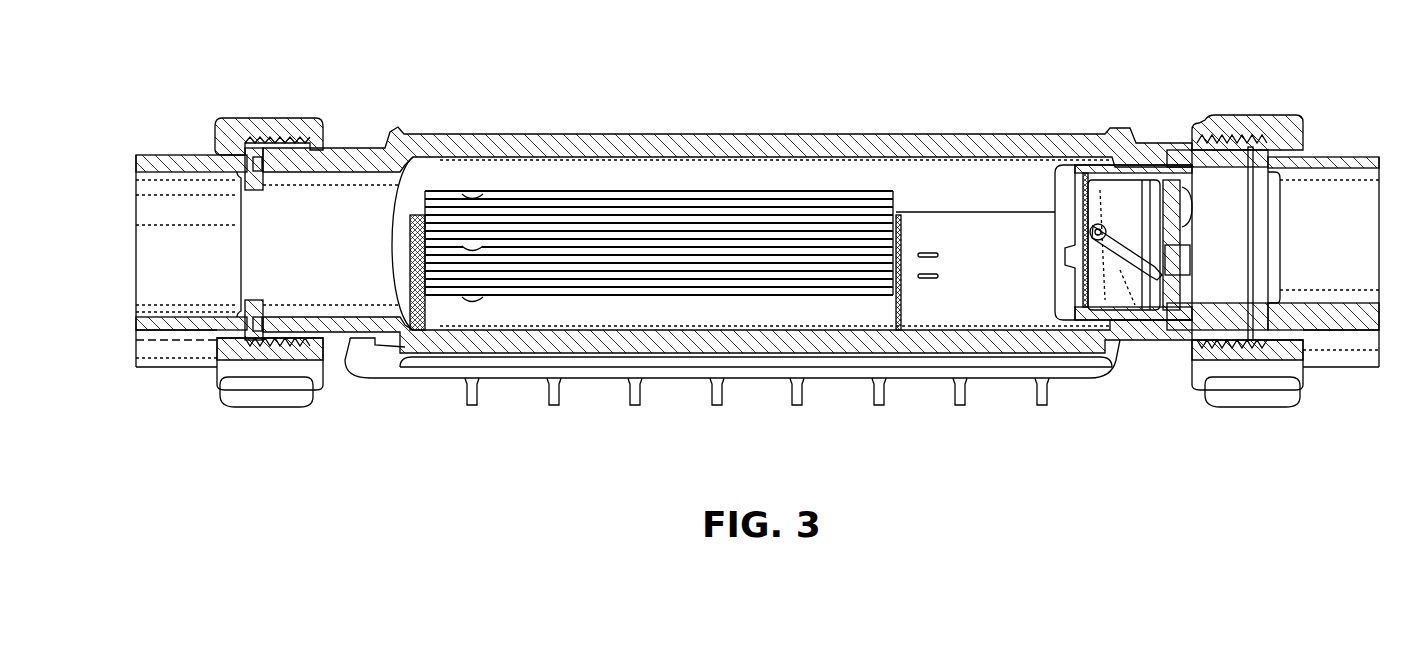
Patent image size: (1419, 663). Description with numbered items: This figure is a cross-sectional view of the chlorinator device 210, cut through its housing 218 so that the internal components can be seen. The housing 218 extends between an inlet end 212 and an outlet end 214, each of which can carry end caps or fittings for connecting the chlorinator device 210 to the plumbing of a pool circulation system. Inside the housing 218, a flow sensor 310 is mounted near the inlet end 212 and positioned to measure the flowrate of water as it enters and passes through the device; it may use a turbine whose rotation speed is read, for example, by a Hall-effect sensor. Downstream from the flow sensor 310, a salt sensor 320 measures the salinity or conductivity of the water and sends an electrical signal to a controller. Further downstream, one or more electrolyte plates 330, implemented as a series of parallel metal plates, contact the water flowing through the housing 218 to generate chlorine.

The chlorinator device 210 is at (437, 24).
The inlet end 212 is at (1370, 193).
The outlet end 214 is at (163, 258).
The housing 218 is at (1040, 145).
The flow sensor 310 is at (1148, 292).
The salt sensor 320 is at (922, 282).
The electrolyte plates 330 is at (657, 268).